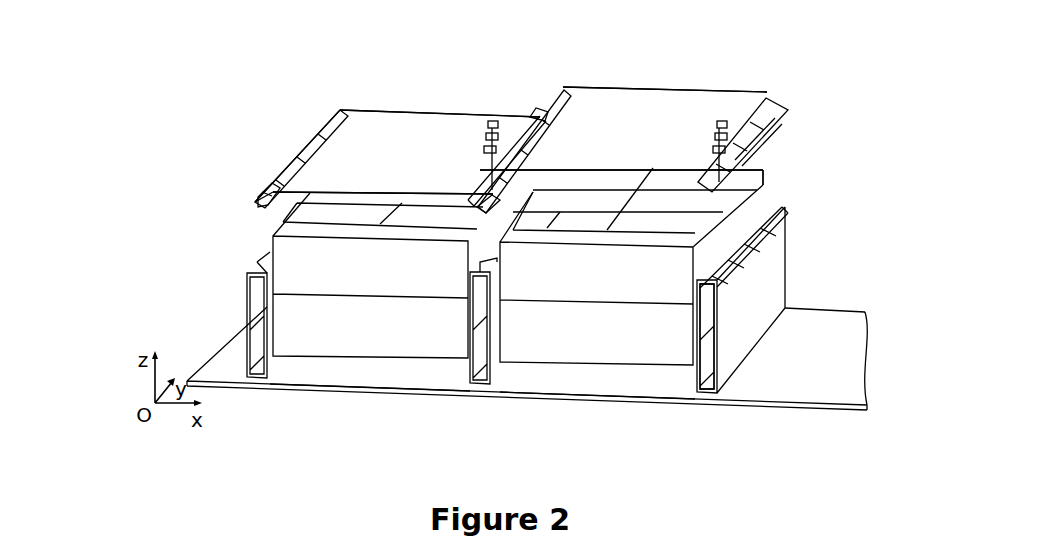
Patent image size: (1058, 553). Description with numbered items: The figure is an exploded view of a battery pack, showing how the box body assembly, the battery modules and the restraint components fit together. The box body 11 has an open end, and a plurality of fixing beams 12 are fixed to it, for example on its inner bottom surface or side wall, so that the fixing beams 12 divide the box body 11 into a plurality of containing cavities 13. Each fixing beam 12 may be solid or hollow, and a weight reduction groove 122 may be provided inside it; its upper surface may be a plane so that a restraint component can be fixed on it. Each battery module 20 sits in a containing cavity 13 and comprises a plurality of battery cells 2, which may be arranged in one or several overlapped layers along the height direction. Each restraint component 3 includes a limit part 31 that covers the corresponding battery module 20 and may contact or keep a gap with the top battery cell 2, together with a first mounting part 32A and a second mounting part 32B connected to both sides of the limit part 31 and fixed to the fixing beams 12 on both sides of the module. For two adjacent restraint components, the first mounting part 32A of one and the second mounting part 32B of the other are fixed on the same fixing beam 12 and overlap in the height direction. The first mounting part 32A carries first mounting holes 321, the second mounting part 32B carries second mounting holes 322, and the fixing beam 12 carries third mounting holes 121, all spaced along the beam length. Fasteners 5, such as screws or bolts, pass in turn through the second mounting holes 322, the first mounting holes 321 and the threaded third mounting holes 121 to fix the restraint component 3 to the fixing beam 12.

The battery cell 2 is at (310, 212).
The restraint component 3 is at (292, 130).
The fastener 5 is at (498, 122).
The box body 11 is at (796, 386).
The fixing beam 12 is at (253, 372).
The containing cavity 13 is at (373, 375).
The battery module 20 is at (266, 246).
The limit part 31 is at (363, 120).
The first mounting part 32A is at (473, 203).
The second mounting part 32B is at (323, 122).
The third mounting hole 121 is at (257, 263).
The weight reduction groove 122 is at (710, 300).
The first mounting hole 321 is at (752, 138).
The second mounting hole 322 is at (272, 184).